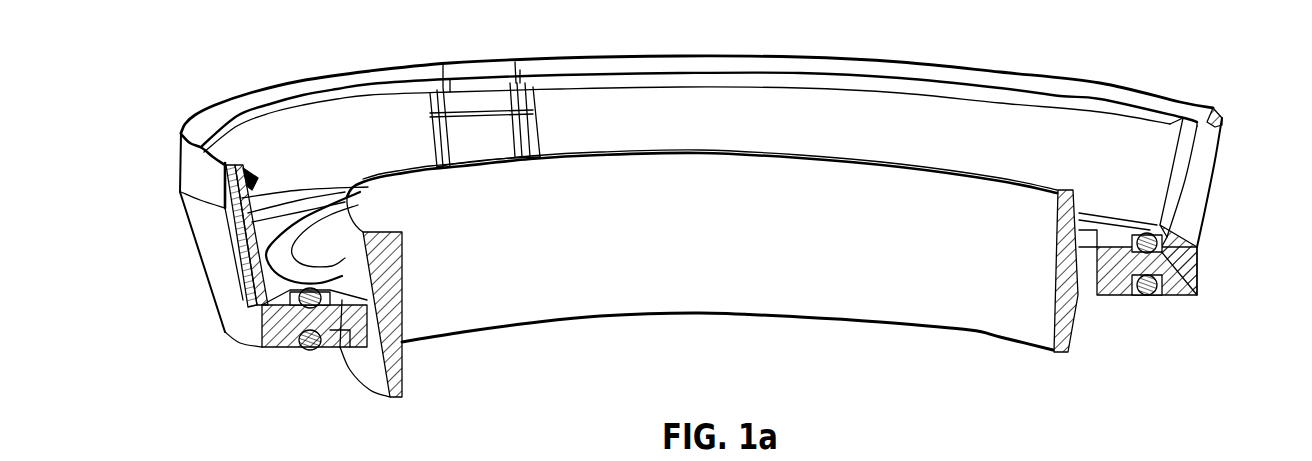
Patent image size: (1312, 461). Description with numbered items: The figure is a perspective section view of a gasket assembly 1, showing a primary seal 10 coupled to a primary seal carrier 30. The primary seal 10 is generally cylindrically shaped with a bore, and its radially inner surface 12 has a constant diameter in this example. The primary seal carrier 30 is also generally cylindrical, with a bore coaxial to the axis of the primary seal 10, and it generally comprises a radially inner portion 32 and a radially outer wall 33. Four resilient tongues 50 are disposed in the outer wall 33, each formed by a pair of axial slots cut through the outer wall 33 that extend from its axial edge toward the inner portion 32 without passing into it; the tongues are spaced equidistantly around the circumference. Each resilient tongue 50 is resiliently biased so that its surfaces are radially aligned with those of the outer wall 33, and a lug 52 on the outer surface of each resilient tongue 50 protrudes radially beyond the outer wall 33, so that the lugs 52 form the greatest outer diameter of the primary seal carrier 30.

The gasket assembly 1 is at (165, 70).
The primary seal 10 is at (1076, 300).
The radially inner surface 12 is at (990, 300).
The primary seal carrier 30 is at (1195, 268).
The radially inner portion 32 is at (272, 343).
The radially outer wall 33 is at (1022, 137).
The resilient tongue 50 is at (478, 135).
The lug 52 is at (1222, 130).